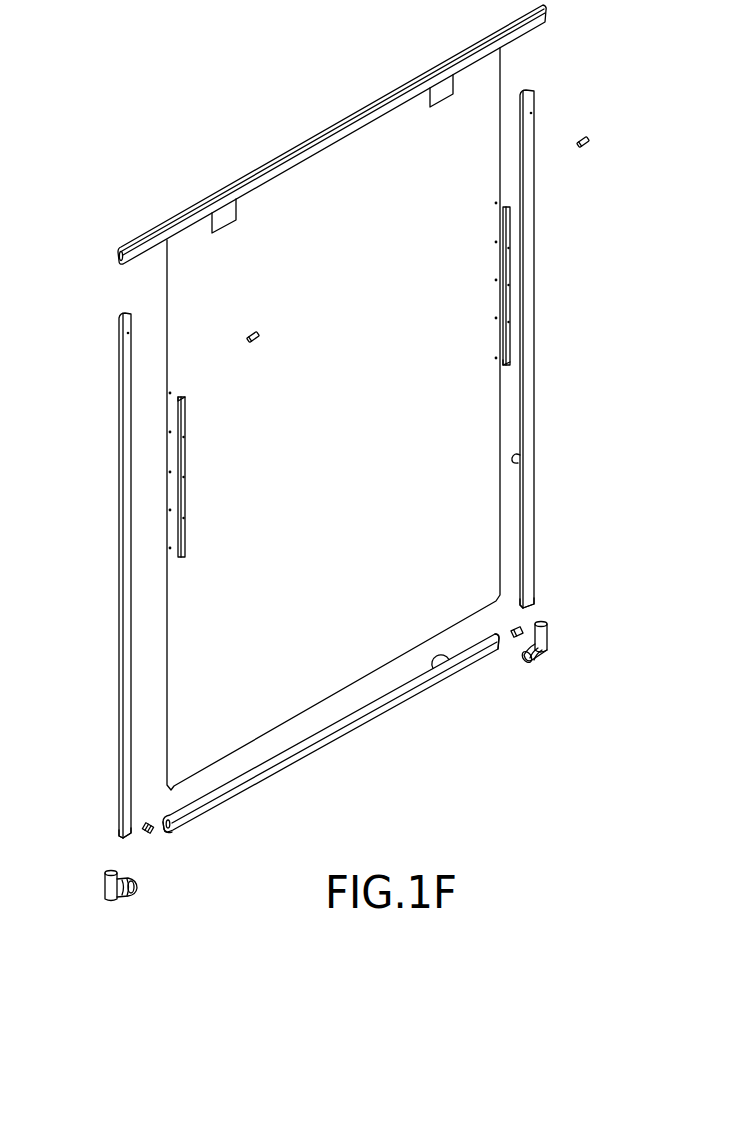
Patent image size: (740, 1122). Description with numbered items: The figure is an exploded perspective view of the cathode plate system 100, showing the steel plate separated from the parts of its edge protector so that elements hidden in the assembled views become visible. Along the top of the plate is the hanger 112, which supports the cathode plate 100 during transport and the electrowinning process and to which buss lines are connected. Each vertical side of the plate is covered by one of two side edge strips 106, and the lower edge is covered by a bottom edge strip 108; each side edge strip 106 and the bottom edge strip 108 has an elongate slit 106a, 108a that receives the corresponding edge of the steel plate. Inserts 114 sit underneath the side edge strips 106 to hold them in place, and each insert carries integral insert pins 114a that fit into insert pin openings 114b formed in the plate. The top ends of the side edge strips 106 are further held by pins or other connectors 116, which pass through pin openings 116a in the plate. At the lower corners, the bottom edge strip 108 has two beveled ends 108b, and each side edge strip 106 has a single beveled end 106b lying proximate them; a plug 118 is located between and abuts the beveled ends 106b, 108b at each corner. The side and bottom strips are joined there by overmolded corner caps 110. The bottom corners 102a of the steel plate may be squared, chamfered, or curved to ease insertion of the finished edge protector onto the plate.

The cathode plate system 100 is at (114, 132).
The bottom corners 102a is at (478, 589).
The side edge strips 106 is at (128, 636).
The elongate slit 106a is at (520, 456).
The beveled end 106b is at (118, 822).
The bottom edge strip 108 is at (363, 718).
The elongate slit 108a is at (442, 653).
The beveled ends 108b is at (173, 826).
The overmolded corner caps 110 is at (112, 895).
The hanger 112 is at (347, 128).
The inserts 114 is at (178, 420).
The integral insert pins 114a is at (178, 396).
The insert pin openings 114b is at (168, 472).
The connectors 116 is at (258, 334).
The pin openings 116a is at (497, 100).
The plug 118 is at (146, 838).